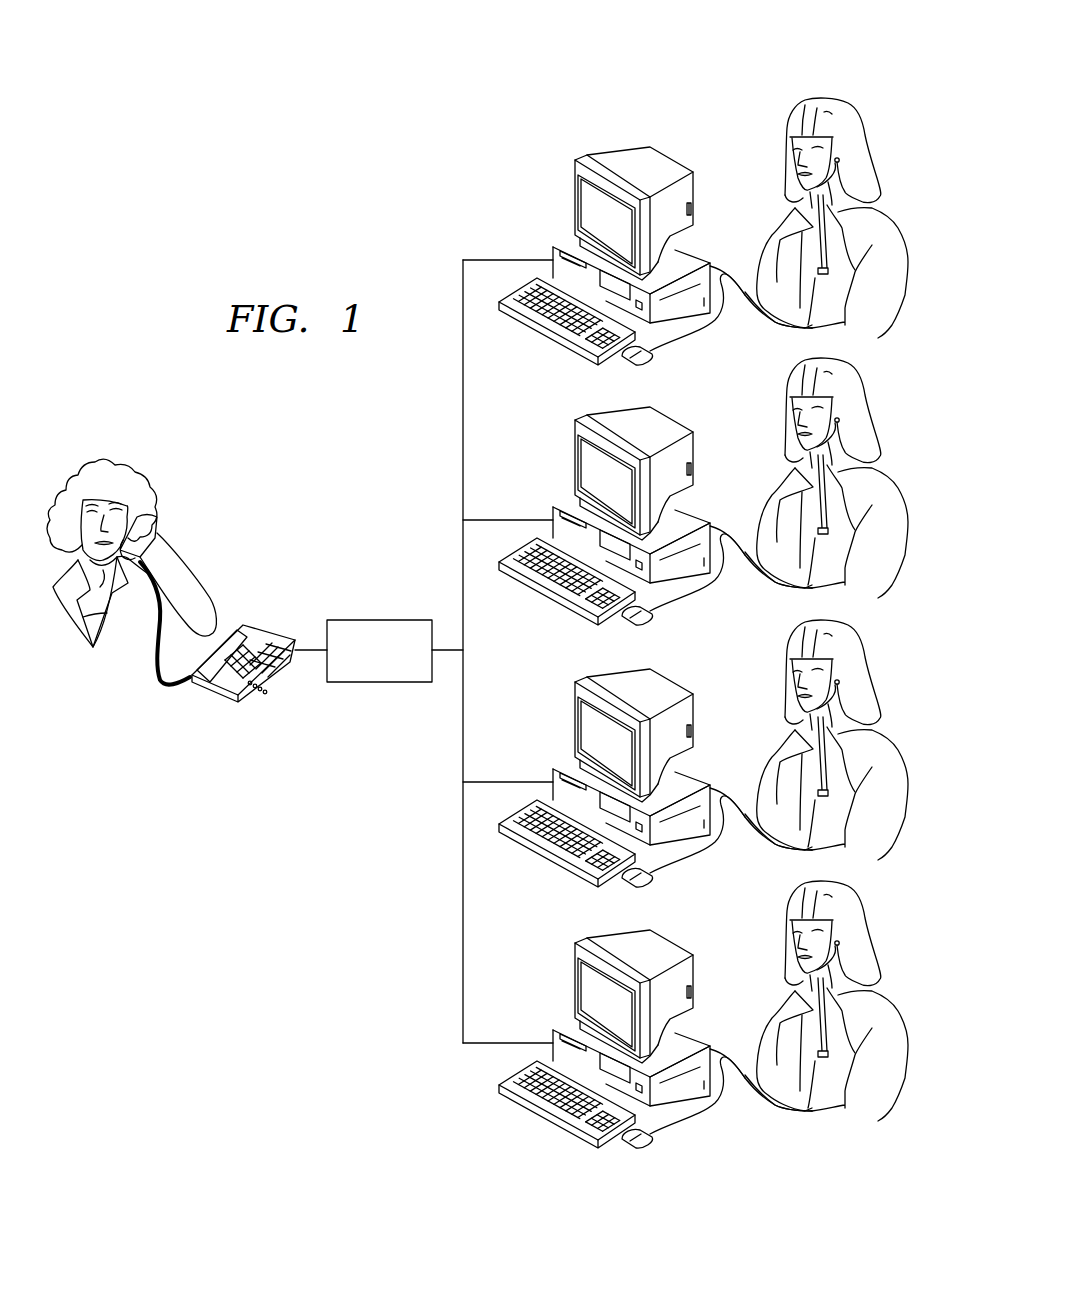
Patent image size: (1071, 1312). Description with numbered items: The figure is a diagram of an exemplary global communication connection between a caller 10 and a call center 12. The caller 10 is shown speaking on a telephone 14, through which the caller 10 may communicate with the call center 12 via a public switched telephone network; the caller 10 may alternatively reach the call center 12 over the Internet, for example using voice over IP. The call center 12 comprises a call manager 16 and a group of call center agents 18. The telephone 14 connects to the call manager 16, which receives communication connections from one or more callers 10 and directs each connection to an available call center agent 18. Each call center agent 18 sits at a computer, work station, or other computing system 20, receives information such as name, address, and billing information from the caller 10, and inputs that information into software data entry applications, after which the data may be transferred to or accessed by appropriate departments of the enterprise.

The caller 10 is at (141, 417).
The call center 12 is at (760, 70).
The telephone 14 is at (273, 633).
The call manager 16 is at (378, 683).
The call center agent 18 is at (887, 213).
The computing system 20 is at (676, 152).